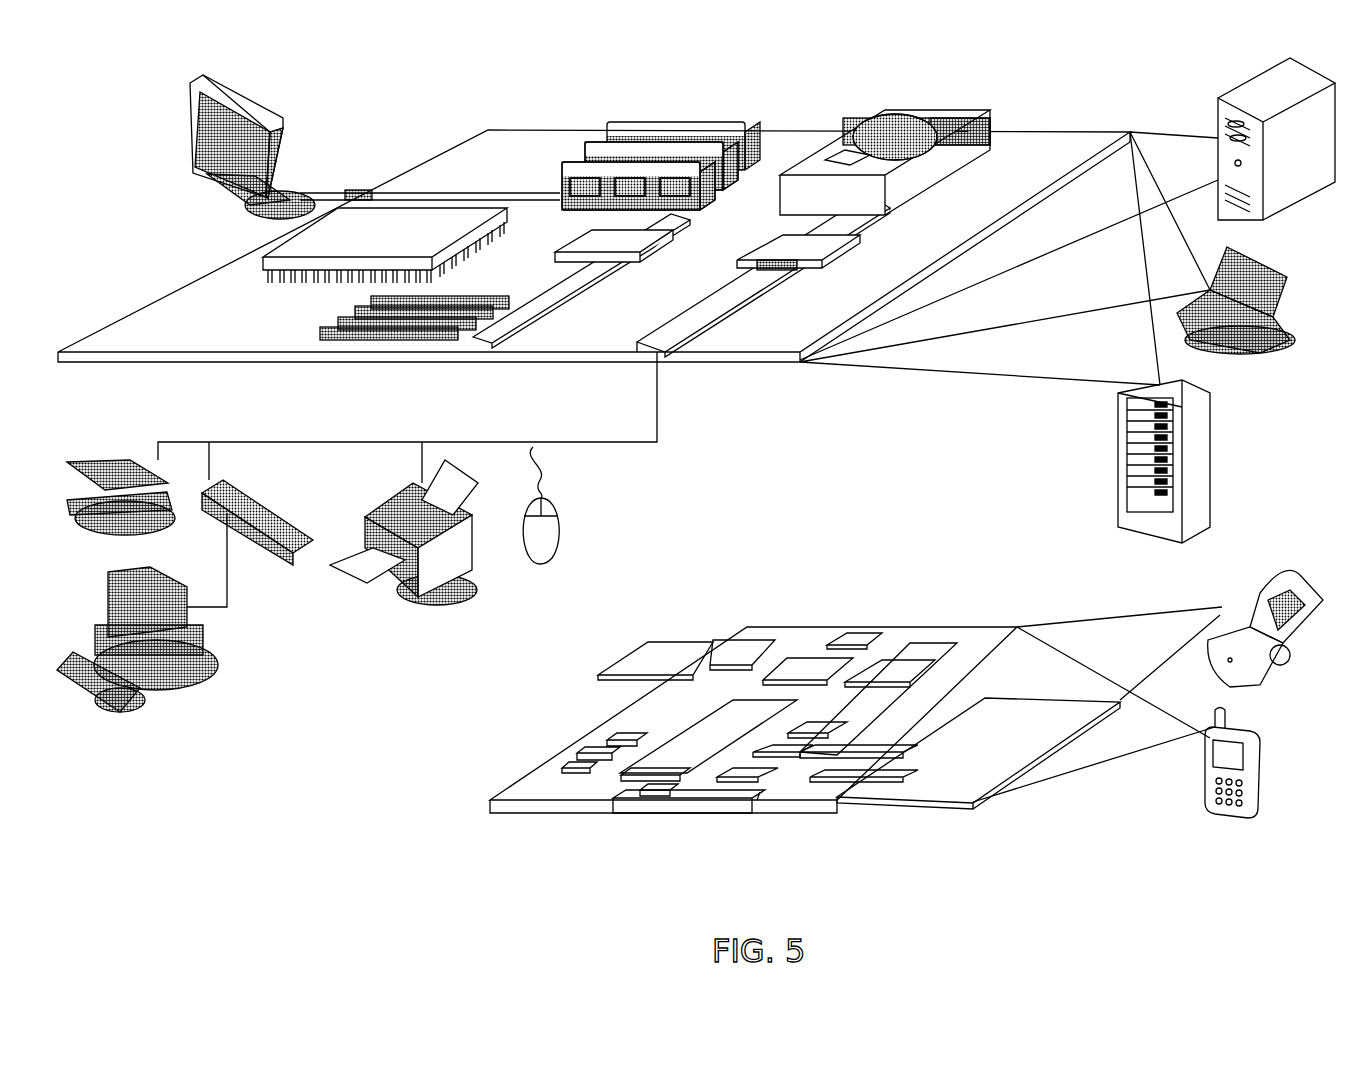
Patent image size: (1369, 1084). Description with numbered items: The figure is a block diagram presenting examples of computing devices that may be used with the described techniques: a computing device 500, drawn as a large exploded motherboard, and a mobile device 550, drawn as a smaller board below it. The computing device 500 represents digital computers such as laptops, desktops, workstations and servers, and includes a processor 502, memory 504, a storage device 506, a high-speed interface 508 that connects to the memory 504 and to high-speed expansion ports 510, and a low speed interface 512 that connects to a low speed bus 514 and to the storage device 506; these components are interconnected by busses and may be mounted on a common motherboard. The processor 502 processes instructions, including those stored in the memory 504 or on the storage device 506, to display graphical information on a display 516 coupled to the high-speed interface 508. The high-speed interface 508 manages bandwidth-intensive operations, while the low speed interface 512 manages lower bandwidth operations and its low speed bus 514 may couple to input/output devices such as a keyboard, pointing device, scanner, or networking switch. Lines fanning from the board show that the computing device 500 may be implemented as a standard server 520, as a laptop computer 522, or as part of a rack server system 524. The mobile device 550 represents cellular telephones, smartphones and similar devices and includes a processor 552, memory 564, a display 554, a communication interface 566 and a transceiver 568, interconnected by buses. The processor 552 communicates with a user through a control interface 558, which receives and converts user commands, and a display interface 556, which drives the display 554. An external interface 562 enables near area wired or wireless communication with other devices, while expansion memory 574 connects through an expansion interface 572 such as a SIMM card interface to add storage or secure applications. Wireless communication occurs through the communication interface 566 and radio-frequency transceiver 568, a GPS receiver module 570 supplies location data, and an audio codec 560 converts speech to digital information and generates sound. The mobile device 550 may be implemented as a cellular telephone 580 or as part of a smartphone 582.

The computing device 500 is at (403, 100).
The processor 502 is at (263, 260).
The memory 504 is at (632, 122).
The storage device 506 is at (880, 110).
The high-speed interface 508 is at (593, 237).
The high-speed expansion ports 510 is at (340, 320).
The low speed interface 512 is at (777, 245).
The low speed bus 514 is at (665, 352).
The display 516 is at (203, 73).
The standard server 520 is at (1218, 103).
The laptop computer 522 is at (1283, 277).
The rack server system 524 is at (1118, 487).
The mobile device 550 is at (458, 814).
The processor 552 is at (682, 767).
The display 554 is at (933, 783).
The display interface 556 is at (757, 800).
The control interface 558 is at (772, 750).
The audio codec 560 is at (817, 730).
The external interface 562 is at (643, 800).
The memory 564 is at (578, 755).
The communication interface 566 is at (810, 668).
The transceiver 568 is at (892, 668).
The GPS receiver module 570 is at (867, 628).
The expansion interface 572 is at (728, 643).
The expansion memory 574 is at (660, 642).
The cellular telephone 580 is at (1263, 585).
The smartphone 582 is at (1203, 772).